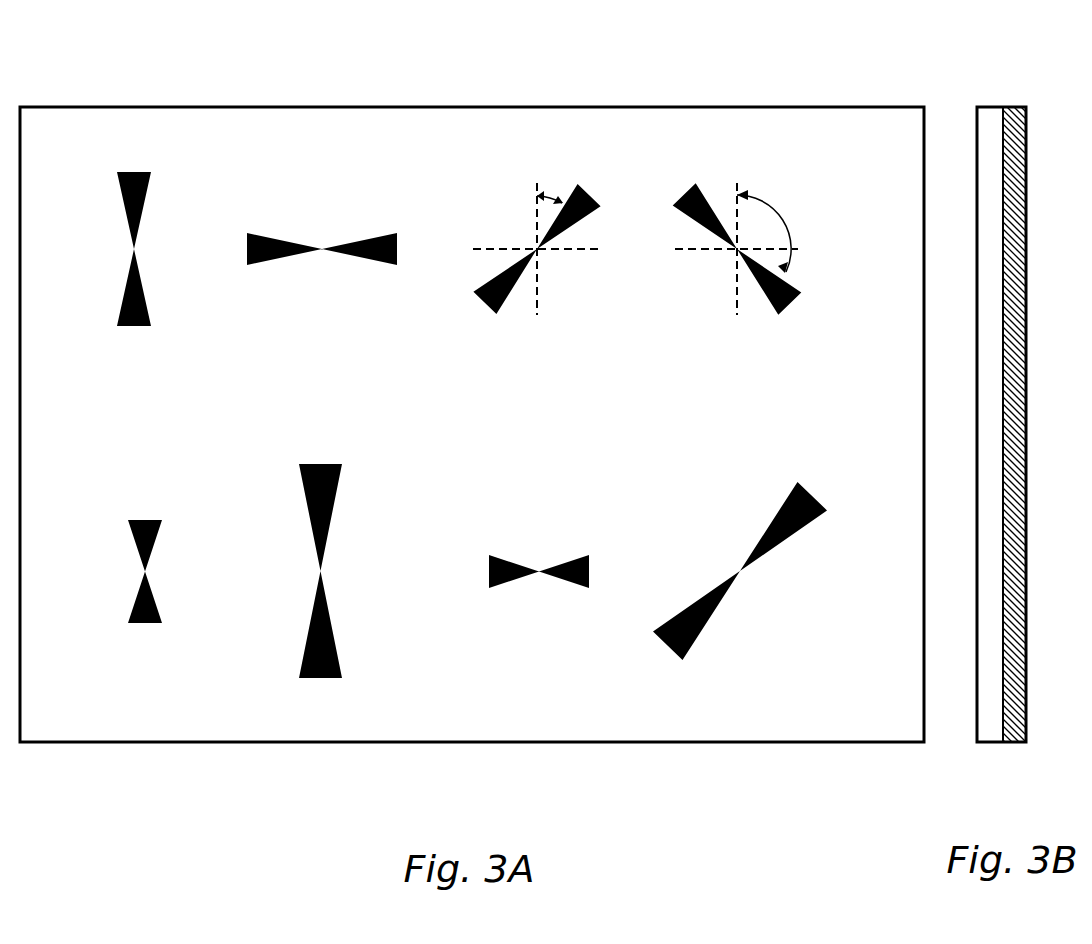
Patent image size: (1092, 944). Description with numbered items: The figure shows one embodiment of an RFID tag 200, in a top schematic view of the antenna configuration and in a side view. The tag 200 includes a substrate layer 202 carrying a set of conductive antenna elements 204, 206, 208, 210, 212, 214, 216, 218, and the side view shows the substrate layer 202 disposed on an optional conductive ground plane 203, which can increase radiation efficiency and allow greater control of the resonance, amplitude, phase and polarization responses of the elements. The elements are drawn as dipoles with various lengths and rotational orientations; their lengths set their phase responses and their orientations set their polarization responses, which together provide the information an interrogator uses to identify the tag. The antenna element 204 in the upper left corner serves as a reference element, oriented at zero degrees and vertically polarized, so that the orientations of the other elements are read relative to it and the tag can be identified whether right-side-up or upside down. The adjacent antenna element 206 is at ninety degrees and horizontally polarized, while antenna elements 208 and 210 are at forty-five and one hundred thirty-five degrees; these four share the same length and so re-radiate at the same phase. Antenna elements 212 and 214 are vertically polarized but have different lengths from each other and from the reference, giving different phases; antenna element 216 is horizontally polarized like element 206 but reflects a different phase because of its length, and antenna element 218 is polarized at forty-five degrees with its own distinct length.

In FIG. 3A, the RFID tag 200 is at (880, 18).
In FIG. 3B, the substrate layer 202 is at (900, 725).
In FIG. 3B, the conductive ground plane 203 is at (1027, 730).
In FIG. 3A, the antenna element 204 is at (132, 170).
In FIG. 3A, the antenna element 206 is at (277, 238).
In FIG. 3A, the antenna element 208 is at (595, 185).
In FIG. 3A, the antenna element 210 is at (688, 185).
In FIG. 3A, the antenna element 212 is at (147, 625).
In FIG. 3A, the antenna element 214 is at (320, 678).
In FIG. 3A, the antenna element 216 is at (555, 578).
In FIG. 3A, the antenna element 218 is at (667, 647).